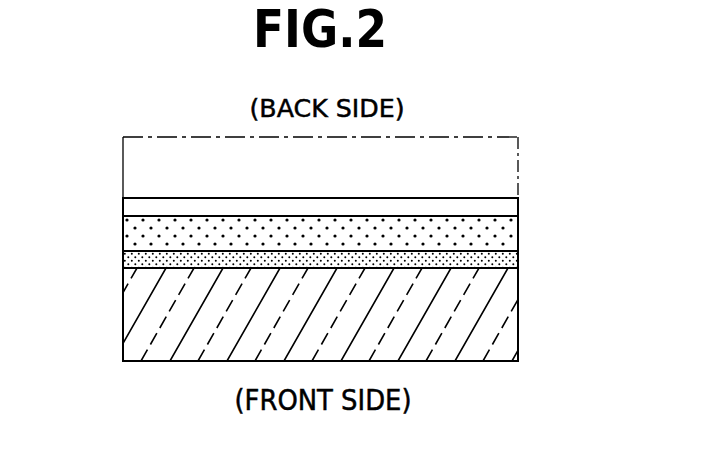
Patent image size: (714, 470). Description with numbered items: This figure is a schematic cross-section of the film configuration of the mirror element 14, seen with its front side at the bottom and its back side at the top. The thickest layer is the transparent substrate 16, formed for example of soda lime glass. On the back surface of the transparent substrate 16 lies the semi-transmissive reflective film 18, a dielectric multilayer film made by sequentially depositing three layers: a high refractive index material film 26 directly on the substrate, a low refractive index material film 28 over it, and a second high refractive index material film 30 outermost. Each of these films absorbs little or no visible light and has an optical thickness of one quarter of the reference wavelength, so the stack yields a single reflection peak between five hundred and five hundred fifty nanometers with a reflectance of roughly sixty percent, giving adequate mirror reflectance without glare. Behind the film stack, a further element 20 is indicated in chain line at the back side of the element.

The mirror element 14 is at (333, 277).
The transparent substrate 16 is at (296, 314).
The semi-transmissive reflective film 18 is at (317, 249).
The backing layer 20 is at (518, 152).
The high refractive index material film 26 is at (512, 262).
The low refractive index material film 28 is at (512, 235).
The high refractive index material film 30 is at (512, 205).